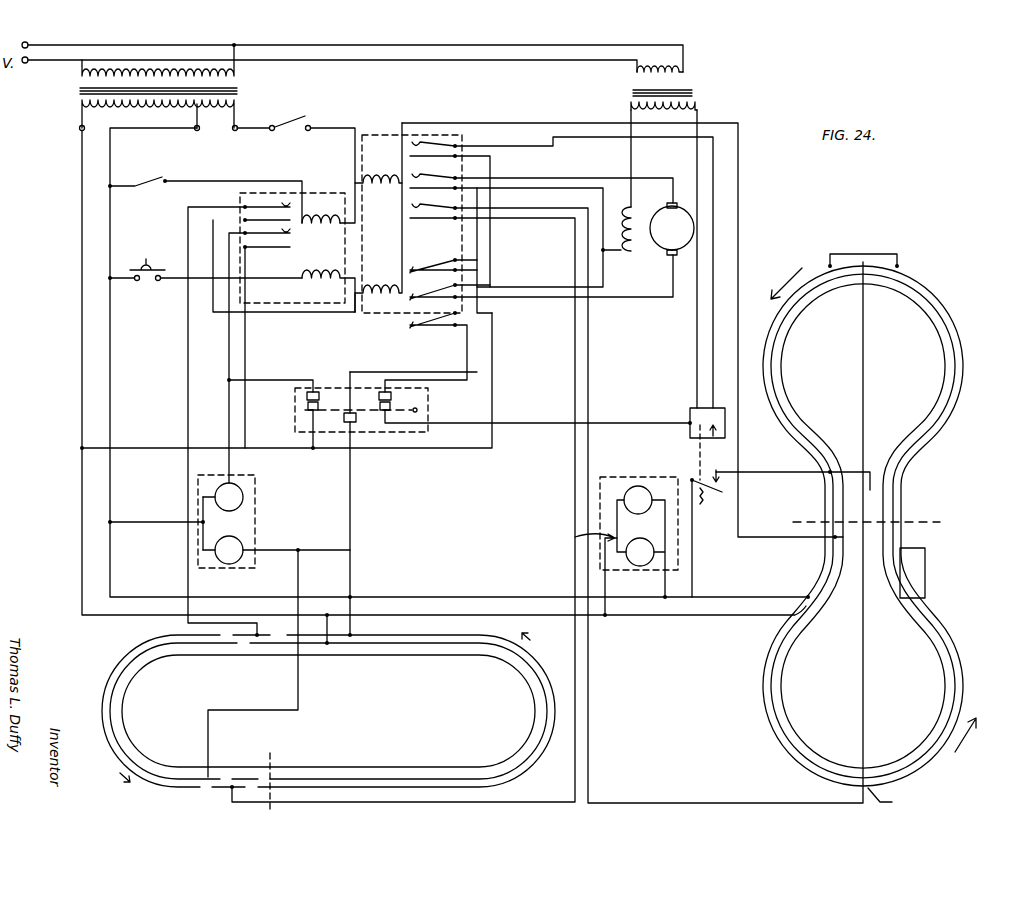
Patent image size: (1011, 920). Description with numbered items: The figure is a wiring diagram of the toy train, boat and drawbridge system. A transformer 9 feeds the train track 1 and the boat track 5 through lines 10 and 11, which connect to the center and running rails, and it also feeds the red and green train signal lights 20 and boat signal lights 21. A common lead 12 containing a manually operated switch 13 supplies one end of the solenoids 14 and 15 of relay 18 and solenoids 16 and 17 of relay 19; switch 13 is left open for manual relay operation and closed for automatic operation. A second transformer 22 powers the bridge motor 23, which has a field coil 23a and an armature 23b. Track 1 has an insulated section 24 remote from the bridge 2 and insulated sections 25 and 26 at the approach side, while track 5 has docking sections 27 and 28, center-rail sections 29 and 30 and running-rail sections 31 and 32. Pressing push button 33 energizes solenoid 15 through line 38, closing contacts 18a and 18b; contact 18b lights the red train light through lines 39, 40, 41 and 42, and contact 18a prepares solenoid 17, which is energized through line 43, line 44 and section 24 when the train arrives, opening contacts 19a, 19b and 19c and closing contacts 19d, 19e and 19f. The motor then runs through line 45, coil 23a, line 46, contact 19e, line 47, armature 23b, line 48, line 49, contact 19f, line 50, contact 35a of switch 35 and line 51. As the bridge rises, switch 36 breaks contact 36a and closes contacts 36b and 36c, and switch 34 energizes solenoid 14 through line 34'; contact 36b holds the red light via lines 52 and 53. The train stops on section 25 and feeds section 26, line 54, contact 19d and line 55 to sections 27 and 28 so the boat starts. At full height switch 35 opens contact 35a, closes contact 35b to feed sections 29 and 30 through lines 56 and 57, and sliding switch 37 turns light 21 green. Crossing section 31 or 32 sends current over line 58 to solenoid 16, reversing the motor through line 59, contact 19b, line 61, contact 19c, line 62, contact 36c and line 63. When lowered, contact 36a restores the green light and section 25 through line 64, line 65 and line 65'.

The train track 1 is at (97, 659).
The bridge 2 is at (275, 757).
The boat track 5 is at (956, 308).
The transformer 9 is at (76, 98).
The line 10 is at (82, 202).
The line 11 is at (110, 160).
The line 12 is at (251, 125).
The manually operated switch 13 is at (297, 117).
The operating solenoid 14 is at (318, 214).
The operating solenoid 15 is at (322, 272).
The operating solenoid 16 is at (378, 166).
The operating solenoid 17 is at (376, 286).
The relay 18 is at (238, 194).
The contact 18a is at (266, 212).
The contact 18b is at (266, 239).
The relay 19 is at (373, 132).
The contact 19a is at (433, 315).
The contact 19b is at (450, 287).
The contact 19c is at (443, 261).
The contact 19d is at (433, 212).
The contact 19e is at (433, 182).
The contact 19f is at (433, 150).
The train signal lights 20 is at (258, 498).
The boat signal lights 21 is at (640, 478).
The second transformer 22 is at (700, 94).
The bridge motor 23 is at (650, 255).
The field coil 23a is at (628, 208).
The armature 23b is at (678, 203).
The insulated section 24 is at (268, 646).
The insulated section 25 is at (226, 773).
The insulated section 26 is at (215, 789).
The insulated section 27 is at (878, 262).
The insulated section 28 is at (890, 801).
The insulated section 29 is at (832, 470).
The insulated section 30 is at (926, 572).
The insulated section 31 is at (838, 540).
The insulated section 32 is at (868, 516).
The push button 33 is at (150, 262).
The switch 34 is at (142, 170).
The line 34' is at (233, 196).
The switch 35 is at (697, 452).
The contact 35a is at (726, 420).
The contact 35b is at (726, 488).
The switch 36 is at (430, 411).
The contact 36a is at (355, 422).
The contact 36b is at (324, 401).
The contact 36c is at (397, 400).
The sliding switch 37 is at (577, 572).
The line 38 is at (174, 282).
The line 39 is at (148, 524).
The line 40 is at (228, 394).
The line 41 is at (246, 354).
The line 42 is at (492, 324).
The line 43 is at (300, 313).
The line 44 is at (187, 388).
The line 45 is at (629, 161).
The line 46 is at (548, 200).
The line 47 is at (573, 181).
The line 48 is at (615, 300).
The line 49 is at (492, 244).
The line 50 is at (527, 143).
The line 51 is at (696, 333).
The line 52 is at (284, 380).
The line 53 is at (310, 436).
The line 54 is at (536, 222).
The line 55 is at (520, 198).
The line 56 is at (710, 538).
The line 57 is at (775, 471).
The line 58 is at (396, 128).
The line 59 is at (545, 271).
The line 61 is at (474, 235).
The line 62 is at (482, 362).
The line 63 is at (515, 425).
The line 64 is at (426, 378).
The line 65 is at (279, 650).
The line 65' is at (316, 575).